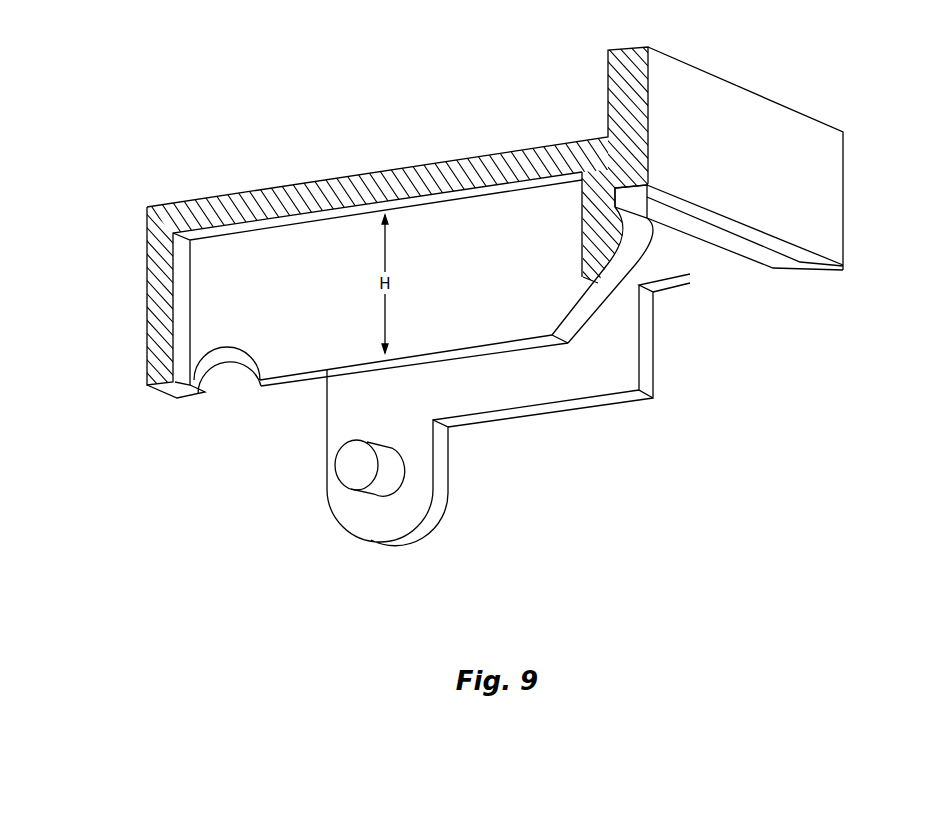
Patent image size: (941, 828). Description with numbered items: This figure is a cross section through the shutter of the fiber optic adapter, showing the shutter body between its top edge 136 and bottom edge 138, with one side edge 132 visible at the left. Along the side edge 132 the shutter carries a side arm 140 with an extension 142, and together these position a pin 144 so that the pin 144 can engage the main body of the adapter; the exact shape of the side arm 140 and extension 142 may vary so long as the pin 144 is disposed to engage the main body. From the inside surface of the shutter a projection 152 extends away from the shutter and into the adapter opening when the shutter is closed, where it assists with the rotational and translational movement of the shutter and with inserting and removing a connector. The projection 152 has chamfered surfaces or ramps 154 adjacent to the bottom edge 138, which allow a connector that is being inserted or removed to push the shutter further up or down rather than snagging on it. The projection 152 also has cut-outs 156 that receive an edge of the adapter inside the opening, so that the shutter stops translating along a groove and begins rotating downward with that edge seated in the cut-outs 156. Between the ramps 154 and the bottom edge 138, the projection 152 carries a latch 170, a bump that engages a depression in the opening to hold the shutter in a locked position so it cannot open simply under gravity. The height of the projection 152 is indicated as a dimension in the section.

The side edge 132 is at (797, 272).
The top edge 136 is at (147, 243).
The bottom edge 138 is at (838, 202).
The side arm 140 is at (417, 397).
The extension 142 is at (428, 530).
The pin 144 is at (380, 485).
The projection 152 is at (305, 356).
The chamfered surfaces or ramps 154 is at (588, 322).
The cut-outs 156 is at (213, 372).
The latch 170 is at (653, 238).